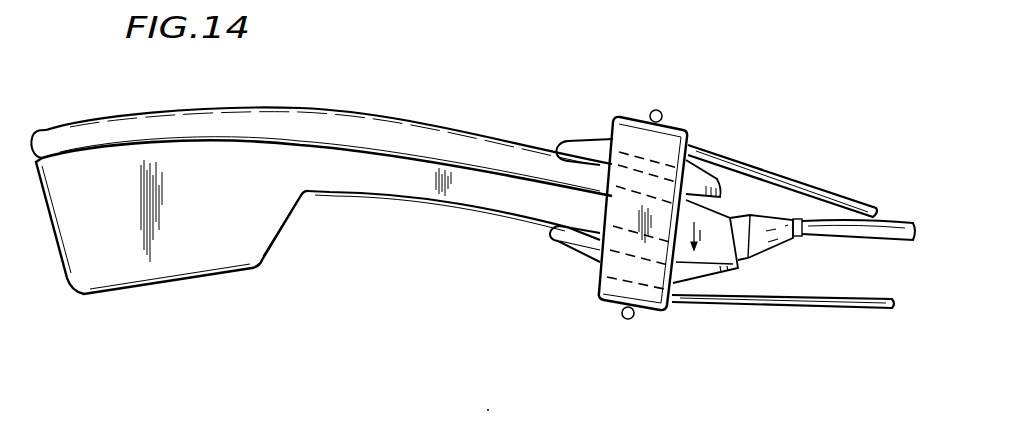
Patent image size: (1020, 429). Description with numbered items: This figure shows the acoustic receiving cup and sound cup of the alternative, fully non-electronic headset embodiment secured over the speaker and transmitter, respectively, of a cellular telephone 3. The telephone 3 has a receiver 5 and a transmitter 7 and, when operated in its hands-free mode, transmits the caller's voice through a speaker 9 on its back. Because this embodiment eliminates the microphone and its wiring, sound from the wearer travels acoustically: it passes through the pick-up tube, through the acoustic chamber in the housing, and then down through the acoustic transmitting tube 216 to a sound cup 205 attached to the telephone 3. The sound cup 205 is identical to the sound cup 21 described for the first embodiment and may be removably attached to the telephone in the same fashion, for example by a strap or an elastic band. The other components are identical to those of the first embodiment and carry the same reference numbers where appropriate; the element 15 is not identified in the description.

The cellular telephone 3 is at (362, 111).
The receiver 5 is at (158, 283).
The transmitter 7 is at (551, 228).
The speaker 9 is at (557, 155).
The upper rod 15 is at (793, 175).
The sound cup 21 is at (598, 130).
The sound cup 205 is at (582, 262).
The acoustic transmitting tube 216 is at (777, 308).